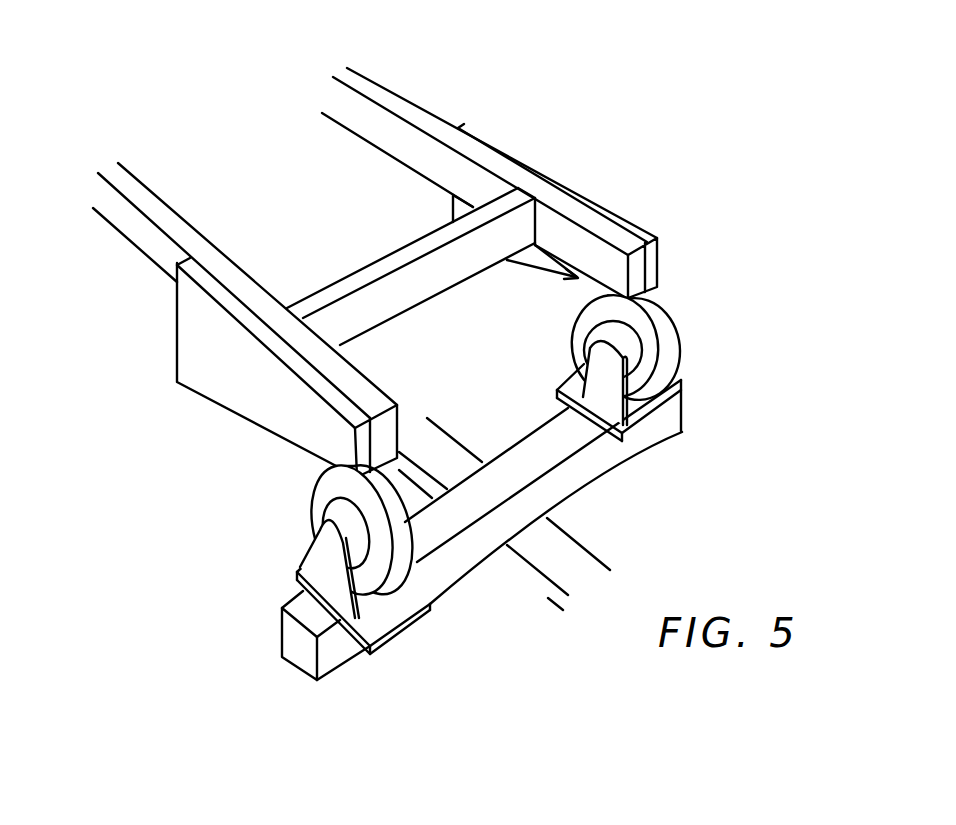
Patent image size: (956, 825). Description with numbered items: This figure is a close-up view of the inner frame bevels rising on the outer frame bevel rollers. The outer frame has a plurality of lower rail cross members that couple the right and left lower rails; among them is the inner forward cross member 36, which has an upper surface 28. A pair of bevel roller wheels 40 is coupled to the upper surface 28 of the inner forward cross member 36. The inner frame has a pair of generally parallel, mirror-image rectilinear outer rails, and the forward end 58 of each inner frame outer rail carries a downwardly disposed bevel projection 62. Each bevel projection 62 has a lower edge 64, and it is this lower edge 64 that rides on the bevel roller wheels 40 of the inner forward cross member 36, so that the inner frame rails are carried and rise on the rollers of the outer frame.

The forward end 58 is at (240, 256).
The bevel projection 62 is at (234, 352).
The lower edge 64 is at (268, 434).
The upper surface 28 is at (547, 456).
The bevel roller wheels 40 is at (678, 334).
The inner forward cross member 36 is at (577, 510).